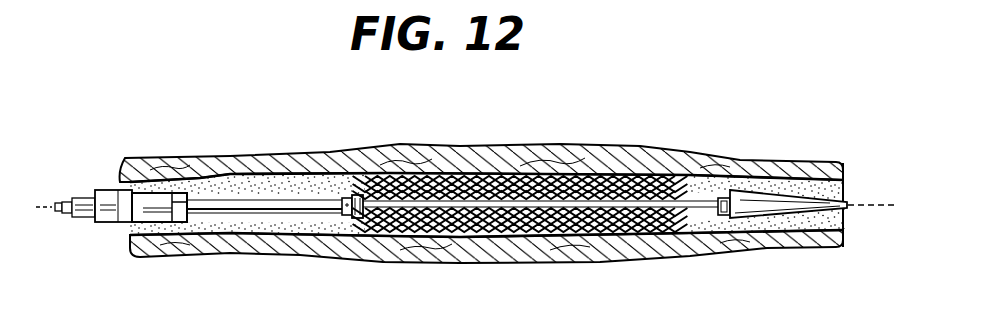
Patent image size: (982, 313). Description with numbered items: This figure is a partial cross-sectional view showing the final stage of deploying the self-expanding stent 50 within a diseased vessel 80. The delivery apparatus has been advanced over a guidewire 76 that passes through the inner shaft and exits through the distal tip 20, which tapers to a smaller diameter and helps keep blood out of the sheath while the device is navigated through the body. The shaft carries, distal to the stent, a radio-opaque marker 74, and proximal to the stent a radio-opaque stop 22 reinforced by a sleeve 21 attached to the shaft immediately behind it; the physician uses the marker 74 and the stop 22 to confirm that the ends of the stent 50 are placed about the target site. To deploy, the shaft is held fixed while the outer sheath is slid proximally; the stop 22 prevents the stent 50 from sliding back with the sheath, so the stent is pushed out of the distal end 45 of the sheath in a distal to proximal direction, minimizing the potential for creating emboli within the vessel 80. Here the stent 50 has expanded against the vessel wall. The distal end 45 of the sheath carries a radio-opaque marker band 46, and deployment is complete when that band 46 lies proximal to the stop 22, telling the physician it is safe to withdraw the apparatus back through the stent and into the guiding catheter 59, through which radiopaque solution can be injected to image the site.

The vessel 80 is at (307, 155).
The guidewire 76 is at (42, 205).
The guiding catheter 59 is at (107, 215).
The distal end of sheath 45 is at (152, 200).
The radio-opaque marker band 46 is at (180, 200).
The sleeve 21 is at (347, 213).
The stop 22 is at (357, 197).
The stent 50 is at (487, 177).
The radio-opaque marker 74 is at (720, 197).
The distal tip 20 is at (813, 219).